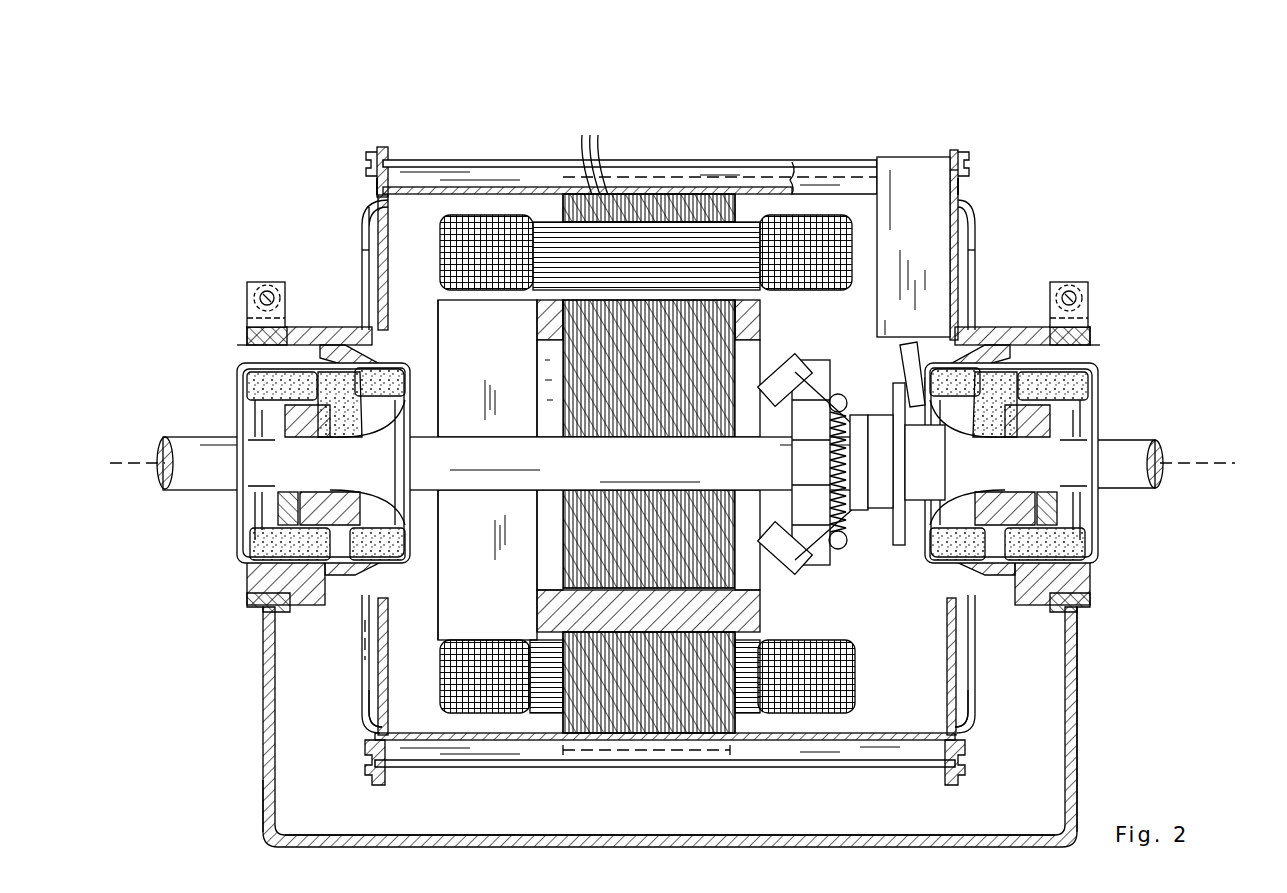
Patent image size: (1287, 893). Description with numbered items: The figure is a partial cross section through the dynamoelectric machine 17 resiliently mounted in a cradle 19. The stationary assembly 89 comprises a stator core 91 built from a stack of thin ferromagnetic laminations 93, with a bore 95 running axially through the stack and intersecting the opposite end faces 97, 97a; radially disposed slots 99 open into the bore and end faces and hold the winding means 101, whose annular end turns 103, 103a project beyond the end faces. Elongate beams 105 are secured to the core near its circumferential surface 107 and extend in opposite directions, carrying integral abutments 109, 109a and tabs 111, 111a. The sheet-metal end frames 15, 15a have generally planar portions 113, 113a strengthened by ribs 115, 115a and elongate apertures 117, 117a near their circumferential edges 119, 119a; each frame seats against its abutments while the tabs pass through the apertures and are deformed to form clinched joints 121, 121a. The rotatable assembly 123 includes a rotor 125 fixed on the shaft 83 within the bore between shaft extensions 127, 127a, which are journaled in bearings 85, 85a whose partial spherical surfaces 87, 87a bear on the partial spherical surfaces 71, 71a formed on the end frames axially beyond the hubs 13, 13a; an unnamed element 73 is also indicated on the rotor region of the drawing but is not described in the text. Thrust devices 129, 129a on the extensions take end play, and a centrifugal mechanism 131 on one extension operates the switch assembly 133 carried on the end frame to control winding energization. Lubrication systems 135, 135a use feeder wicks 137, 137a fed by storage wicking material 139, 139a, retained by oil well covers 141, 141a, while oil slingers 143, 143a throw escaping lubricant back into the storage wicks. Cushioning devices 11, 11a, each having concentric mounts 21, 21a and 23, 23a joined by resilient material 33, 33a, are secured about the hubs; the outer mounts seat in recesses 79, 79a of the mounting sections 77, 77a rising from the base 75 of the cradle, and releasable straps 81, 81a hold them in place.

The cushioning device 11 is at (205, 343).
The opposite cushioning device 11a is at (1130, 343).
The hub 13 is at (360, 328).
The hub 13a is at (963, 328).
The end frame 15 is at (310, 215).
The opposite end frame 15a is at (1048, 252).
The dynamoelectric machine 17 is at (1020, 138).
The cradle 19 is at (258, 833).
The mount 21 is at (247, 380).
The mount 21a is at (1088, 380).
The mount 23 is at (247, 334).
The mount 23a is at (1090, 334).
The resilient material 33 is at (247, 575).
The resilient material 33a is at (1090, 573).
The partial spherical bearing seating surface 71 is at (276, 430).
The partial spherical bearing surface 71a is at (1060, 430).
The rotor hub 73 is at (585, 463).
The base 75 is at (672, 835).
The mounting section 77 is at (263, 680).
The opposite mounting section 77a is at (1077, 680).
The recess 79 is at (262, 610).
The recess 79a is at (1077, 612).
The releasable strap 81 is at (250, 320).
The releasable strap 81a is at (1085, 320).
The rotatable shaft 83 is at (672, 463).
The bearing 85 is at (320, 500).
The bearing 85a is at (1004, 497).
The partial spherical bearing surface 87 is at (290, 492).
The partial spherical bearing surface 87a is at (925, 782).
The stationary assembly 89 is at (818, 157).
The stator core 91 is at (636, 175).
The laminations 93 is at (591, 153).
The bore 95 is at (637, 635).
The end face 97 is at (555, 715).
The opposite end face 97a is at (735, 726).
The winding slots 99 is at (640, 222).
The winding means 101 is at (430, 248).
The end turns 103 is at (475, 290).
The end turns 103a is at (785, 290).
The beams 105 is at (480, 160).
The circumferential surface 107 is at (615, 755).
The abutment 109 is at (390, 188).
The opposite abutment 109a is at (950, 192).
The tab 111 is at (376, 186).
The tab 111a is at (960, 186).
The generally planar portion 113 is at (365, 668).
The generally planar portion 113a is at (968, 668).
The ribs 115 is at (362, 690).
The ribs 115a is at (975, 690).
The apertures 117 is at (378, 197).
The apertures 117a is at (968, 202).
The circumferential edge 119 is at (383, 147).
The circumferential edge 119a is at (955, 150).
The clinched joints 121 is at (368, 160).
The clinched joints 121a is at (970, 165).
The rotatable assembly 123 is at (522, 393).
The rotor 125 is at (649, 444).
The shaft extension 127 is at (165, 470).
The opposite shaft extension 127a is at (1163, 478).
The thrust device 129 is at (438, 513).
The thrust device 129a is at (900, 465).
The centrifugal mechanism 131 is at (780, 560).
The switch assembly 133 is at (913, 247).
The lubrication system 135 is at (232, 410).
The lubrication system 135a is at (1103, 410).
The feeder wick 137 is at (342, 416).
The feeder wick 137a is at (993, 418).
The lubricant storage wicking means 139 is at (250, 540).
The lubricant storage wicking means 139a is at (1085, 540).
The oil well cover 141 is at (400, 372).
The oil well cover 141a is at (932, 560).
The oil slinger 143 is at (258, 488).
The oil slinger 143a is at (1090, 500).